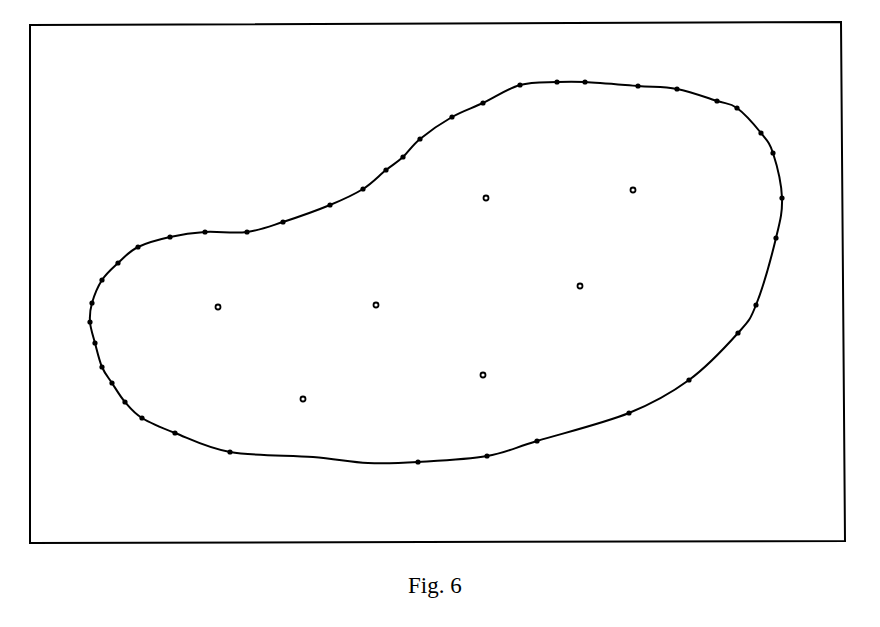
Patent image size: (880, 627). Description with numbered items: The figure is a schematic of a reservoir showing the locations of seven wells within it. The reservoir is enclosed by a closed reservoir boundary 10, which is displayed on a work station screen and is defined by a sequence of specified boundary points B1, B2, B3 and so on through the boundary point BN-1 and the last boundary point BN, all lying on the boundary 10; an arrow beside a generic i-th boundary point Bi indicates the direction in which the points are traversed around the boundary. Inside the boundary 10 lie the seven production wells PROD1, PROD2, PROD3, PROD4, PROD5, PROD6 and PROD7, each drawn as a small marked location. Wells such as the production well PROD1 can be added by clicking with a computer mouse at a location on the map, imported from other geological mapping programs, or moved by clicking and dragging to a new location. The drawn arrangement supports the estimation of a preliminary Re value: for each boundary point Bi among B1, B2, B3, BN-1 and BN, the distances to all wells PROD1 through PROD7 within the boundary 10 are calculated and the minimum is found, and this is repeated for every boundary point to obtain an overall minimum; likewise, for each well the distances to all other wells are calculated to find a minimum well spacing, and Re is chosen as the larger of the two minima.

The reservoir boundary 10 is at (661, 403).
The boundary point B1 is at (543, 456).
The boundary point B2 is at (491, 468).
The boundary point B3 is at (416, 475).
The boundary point BN is at (628, 430).
The boundary point BN-1 is at (708, 394).
The i-th boundary point Bi is at (446, 92).
The production well PROD1 is at (205, 295).
The production well PROD2 is at (481, 189).
The production well PROD3 is at (510, 365).
The production well PROD4 is at (383, 296).
The production well PROD5 is at (608, 276).
The production well PROD6 is at (662, 181).
The production well PROD7 is at (332, 391).